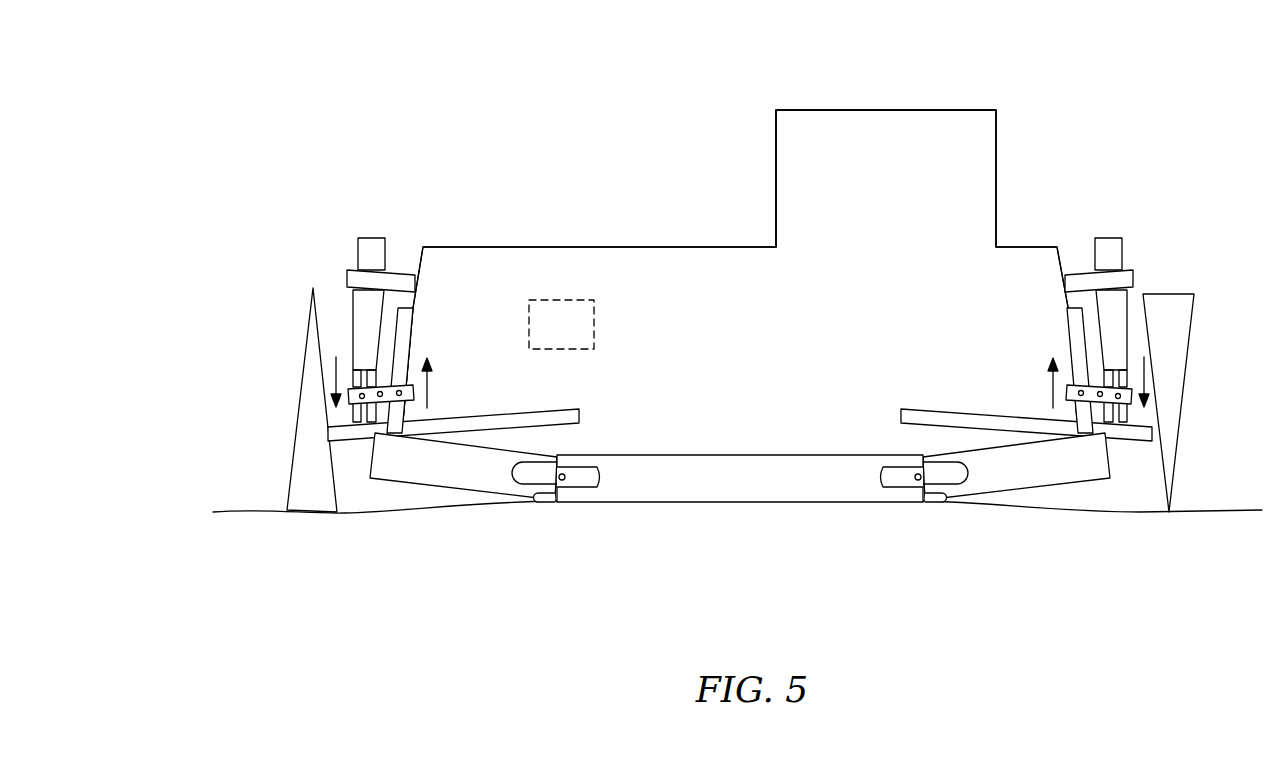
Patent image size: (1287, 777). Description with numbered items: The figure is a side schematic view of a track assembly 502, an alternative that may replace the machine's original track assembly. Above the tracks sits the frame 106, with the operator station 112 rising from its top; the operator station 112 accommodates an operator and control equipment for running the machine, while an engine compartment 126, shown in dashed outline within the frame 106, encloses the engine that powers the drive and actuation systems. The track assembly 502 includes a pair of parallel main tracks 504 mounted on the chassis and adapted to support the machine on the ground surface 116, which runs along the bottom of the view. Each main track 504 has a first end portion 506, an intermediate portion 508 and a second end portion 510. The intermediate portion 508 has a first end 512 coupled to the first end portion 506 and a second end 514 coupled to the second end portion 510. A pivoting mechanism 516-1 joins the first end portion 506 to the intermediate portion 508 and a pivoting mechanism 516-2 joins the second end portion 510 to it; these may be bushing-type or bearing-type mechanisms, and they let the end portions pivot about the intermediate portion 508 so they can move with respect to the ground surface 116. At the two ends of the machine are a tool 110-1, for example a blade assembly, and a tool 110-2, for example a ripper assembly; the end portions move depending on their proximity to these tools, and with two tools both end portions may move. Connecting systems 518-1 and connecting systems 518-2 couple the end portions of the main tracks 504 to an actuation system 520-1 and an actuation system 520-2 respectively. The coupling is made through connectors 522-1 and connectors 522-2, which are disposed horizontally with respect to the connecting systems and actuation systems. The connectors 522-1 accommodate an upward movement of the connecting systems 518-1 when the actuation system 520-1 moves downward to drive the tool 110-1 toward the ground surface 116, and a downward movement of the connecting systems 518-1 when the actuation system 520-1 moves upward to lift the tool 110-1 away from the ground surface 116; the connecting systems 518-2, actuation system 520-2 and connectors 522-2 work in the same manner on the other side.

The frame 106 is at (515, 247).
The operator station 112 is at (887, 110).
The ground surface 116 is at (245, 505).
The engine compartment 126 is at (546, 338).
The tool 110-1 is at (317, 340).
The tool 110-2 is at (1178, 338).
The track assembly 502 is at (888, 283).
The main tracks 504 is at (740, 475).
The first end portion 506 is at (441, 468).
The intermediate portion 508 is at (766, 478).
The second end portion 510 is at (1040, 470).
The first end 512 is at (533, 497).
The second end 514 is at (940, 500).
The pivoting mechanism 516-1 is at (584, 470).
The pivoting mechanism 516-2 is at (896, 470).
The connecting systems 518-1 is at (411, 312).
The connecting systems 518-2 is at (1070, 313).
The actuation system 520-1 is at (368, 252).
The actuation system 520-2 is at (1112, 252).
The connectors 522-1 is at (382, 388).
The connectors 522-2 is at (1098, 387).